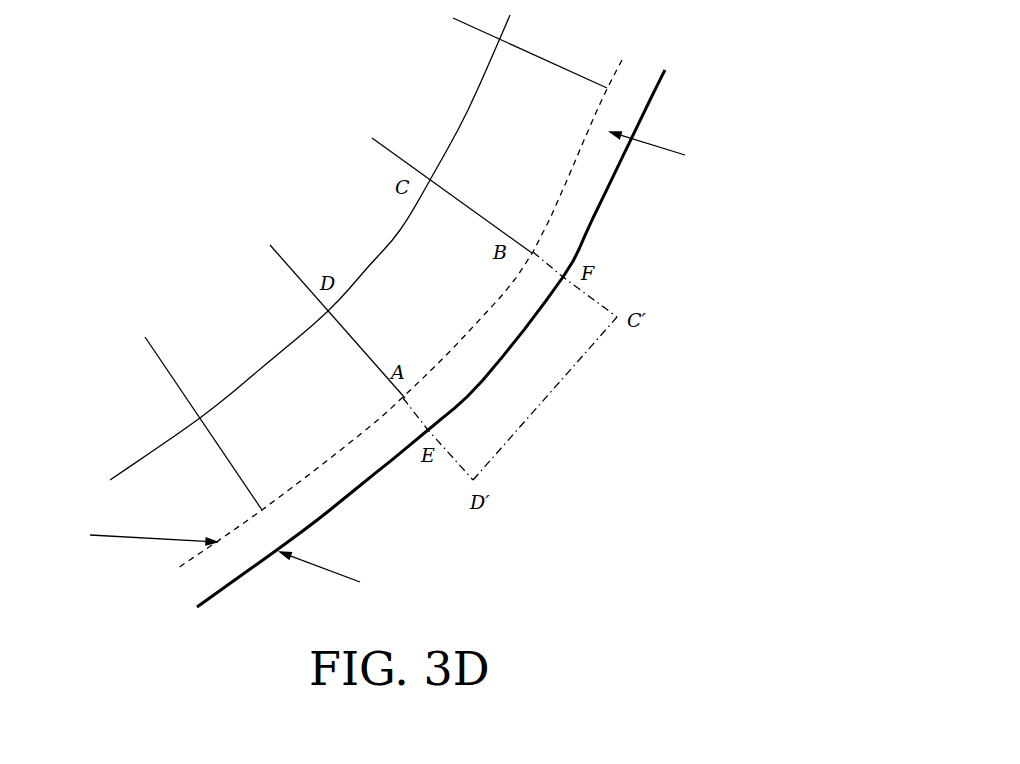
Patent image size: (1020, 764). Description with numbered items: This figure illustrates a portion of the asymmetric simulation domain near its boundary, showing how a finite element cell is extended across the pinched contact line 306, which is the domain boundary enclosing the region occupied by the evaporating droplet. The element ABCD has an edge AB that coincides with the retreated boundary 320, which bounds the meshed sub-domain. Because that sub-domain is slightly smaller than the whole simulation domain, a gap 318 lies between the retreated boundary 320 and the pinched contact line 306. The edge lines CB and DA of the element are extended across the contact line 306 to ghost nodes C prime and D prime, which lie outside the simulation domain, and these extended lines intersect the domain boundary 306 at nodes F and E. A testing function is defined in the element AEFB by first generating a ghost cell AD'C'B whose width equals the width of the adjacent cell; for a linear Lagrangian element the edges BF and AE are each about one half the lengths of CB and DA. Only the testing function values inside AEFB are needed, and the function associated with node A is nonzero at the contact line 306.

The pinched contact line 306 is at (214, 585).
The gap 318 is at (606, 173).
The judiciously retreated boundary 320 is at (303, 496).